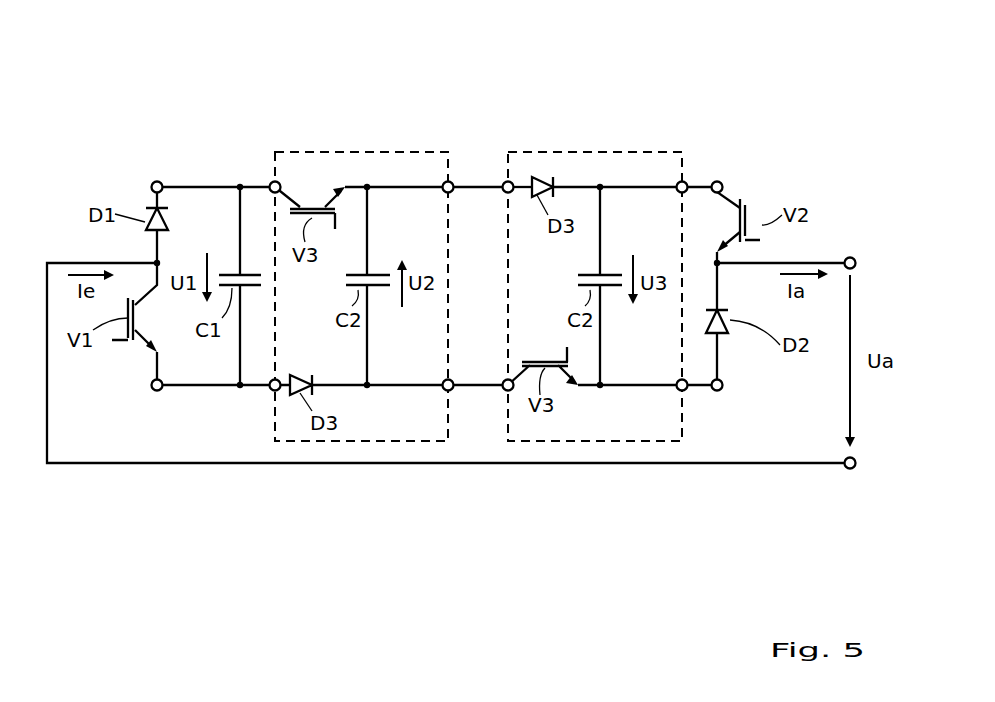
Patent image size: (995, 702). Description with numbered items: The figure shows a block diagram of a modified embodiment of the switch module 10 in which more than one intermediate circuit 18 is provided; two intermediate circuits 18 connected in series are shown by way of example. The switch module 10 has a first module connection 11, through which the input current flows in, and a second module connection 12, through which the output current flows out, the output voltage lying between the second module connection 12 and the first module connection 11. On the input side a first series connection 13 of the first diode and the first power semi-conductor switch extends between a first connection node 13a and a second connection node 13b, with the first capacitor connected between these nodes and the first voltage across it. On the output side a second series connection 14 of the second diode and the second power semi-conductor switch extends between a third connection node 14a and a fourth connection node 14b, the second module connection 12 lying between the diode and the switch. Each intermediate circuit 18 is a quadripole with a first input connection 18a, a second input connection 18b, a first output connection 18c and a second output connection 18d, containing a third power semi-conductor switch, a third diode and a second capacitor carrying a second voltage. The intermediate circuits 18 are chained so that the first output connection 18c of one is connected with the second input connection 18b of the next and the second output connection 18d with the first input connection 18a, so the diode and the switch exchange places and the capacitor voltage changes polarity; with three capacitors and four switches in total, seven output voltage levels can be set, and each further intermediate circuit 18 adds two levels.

The switch module 10 is at (520, 64).
The first module connection 11 is at (857, 463).
The second module connection 12 is at (857, 263).
The first series connection 13 is at (164, 165).
The first connection node 13a is at (153, 183).
The second connection node 13b is at (155, 391).
The second series connection 14 is at (742, 165).
The third connection node 14a is at (723, 389).
The fourth connection node 14b is at (723, 186).
The intermediate circuit 18 is at (378, 150).
The first input connection 18a is at (270, 183).
The second input connection 18b is at (270, 392).
The first output connection 18c is at (450, 180).
The second output connection 18d is at (686, 180).